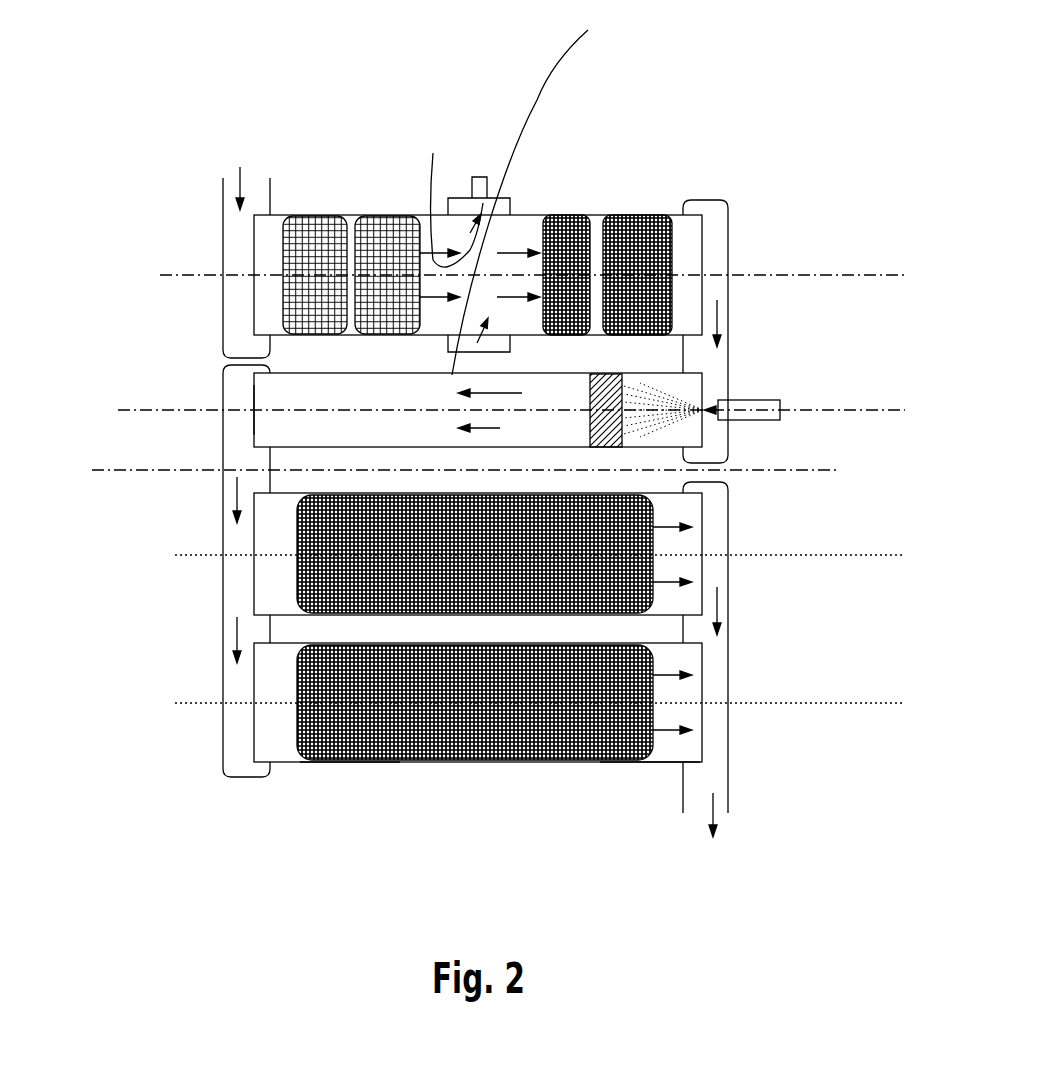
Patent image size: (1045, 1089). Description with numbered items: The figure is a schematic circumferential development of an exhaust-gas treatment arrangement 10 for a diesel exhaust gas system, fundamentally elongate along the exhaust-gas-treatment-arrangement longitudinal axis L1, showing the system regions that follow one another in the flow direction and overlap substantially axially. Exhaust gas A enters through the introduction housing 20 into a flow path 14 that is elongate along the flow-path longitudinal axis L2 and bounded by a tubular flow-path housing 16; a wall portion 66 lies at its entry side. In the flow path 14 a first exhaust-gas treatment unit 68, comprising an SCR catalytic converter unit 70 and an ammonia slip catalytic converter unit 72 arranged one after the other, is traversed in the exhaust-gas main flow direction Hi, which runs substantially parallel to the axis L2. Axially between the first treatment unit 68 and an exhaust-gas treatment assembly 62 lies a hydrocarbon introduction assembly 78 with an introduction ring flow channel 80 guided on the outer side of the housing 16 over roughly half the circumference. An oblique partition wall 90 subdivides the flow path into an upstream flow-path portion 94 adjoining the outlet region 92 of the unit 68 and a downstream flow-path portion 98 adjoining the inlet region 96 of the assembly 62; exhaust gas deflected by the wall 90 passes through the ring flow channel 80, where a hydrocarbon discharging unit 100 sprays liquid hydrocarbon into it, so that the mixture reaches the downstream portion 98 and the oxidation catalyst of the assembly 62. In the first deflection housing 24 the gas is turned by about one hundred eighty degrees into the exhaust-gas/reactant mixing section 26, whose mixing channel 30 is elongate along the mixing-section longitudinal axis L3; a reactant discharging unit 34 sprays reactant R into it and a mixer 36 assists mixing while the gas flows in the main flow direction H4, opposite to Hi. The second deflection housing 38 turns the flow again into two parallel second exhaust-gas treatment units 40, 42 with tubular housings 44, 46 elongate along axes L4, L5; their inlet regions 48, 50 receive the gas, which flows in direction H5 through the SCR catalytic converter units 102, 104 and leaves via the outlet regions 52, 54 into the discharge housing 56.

The exhaust-gas treatment arrangement 10 is at (137, 115).
The flow path 14 is at (315, 110).
The flow-path housing 16 is at (607, 215).
The introduction housing 20 is at (222, 192).
The first deflection housing 24 is at (730, 265).
The exhaust-gas/reactant mixing section 26 is at (760, 386).
The mixing channel 30 is at (267, 423).
The reactant discharging unit 34 is at (790, 401).
The mixer 36 is at (622, 381).
The second deflection housing 38 is at (237, 780).
The second exhaust-gas treatment unit 40 is at (281, 625).
The second exhaust-gas treatment unit 42 is at (352, 763).
The exhaust-gas-treatment-unit housing 44 is at (668, 615).
The exhaust-gas-treatment-unit housing 46 is at (643, 763).
The inlet region 48 is at (267, 575).
The inlet region 50 is at (267, 727).
The outlet region 52 is at (688, 598).
The outlet region 54 is at (688, 742).
The discharge housing 56 is at (732, 673).
The exhaust-gas treatment assembly 62 is at (698, 229).
The first chamber housing 66 is at (273, 228).
The first exhaust-gas treatment unit 68 is at (347, 145).
The SCR catalytic converter unit 70 is at (317, 237).
The ammonia slip catalytic converter unit 72 is at (400, 240).
The hydrocarbon introduction assembly 78 is at (524, 178).
The introduction ring flow channel 80 is at (452, 375).
The partition wall 90 is at (468, 310).
The outlet region 92 is at (538, 193).
The upstream flow-path portion 94 is at (440, 310).
The inlet region 96 is at (542, 215).
The downstream flow-path portion 98 is at (527, 270).
The hydrocarbon discharging unit 100 is at (485, 177).
The SCR catalytic converter unit 102 is at (297, 532).
The SCR catalytic converter unit 104 is at (293, 673).
The exhaust gas A is at (240, 167).
The reactant R is at (703, 420).
The exhaust-gas main flow direction Hi is at (450, 194).
The exhaust-gas main flow direction H4 is at (485, 430).
The exhaust-gas main flow direction H5 is at (672, 530).
The exhaust-gas-treatment-arrangement longitudinal axis L1 is at (92, 464).
The flow-path longitudinal axis L2 is at (878, 276).
The mixing-section longitudinal axis L3 is at (120, 404).
The exhaust-gas-treatment-unit longitudinal axis L4 is at (877, 556).
The exhaust-gas-treatment-unit longitudinal axis L5 is at (877, 704).